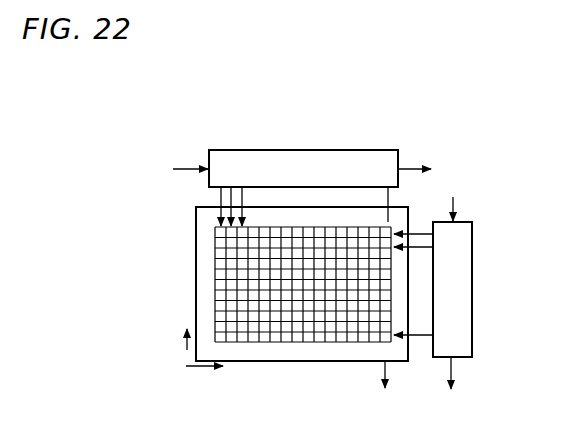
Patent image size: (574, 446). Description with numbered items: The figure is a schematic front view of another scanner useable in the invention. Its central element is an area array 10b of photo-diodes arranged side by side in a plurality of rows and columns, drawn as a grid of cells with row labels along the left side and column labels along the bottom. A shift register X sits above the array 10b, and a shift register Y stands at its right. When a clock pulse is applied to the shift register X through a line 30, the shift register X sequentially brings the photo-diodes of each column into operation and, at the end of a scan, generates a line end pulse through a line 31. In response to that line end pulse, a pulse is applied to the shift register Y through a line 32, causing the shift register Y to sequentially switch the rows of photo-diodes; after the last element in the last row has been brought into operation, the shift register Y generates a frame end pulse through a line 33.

The area array 10b is at (196, 282).
The line 30 is at (205, 167).
The line 31 is at (408, 163).
The line 32 is at (455, 206).
The line 33 is at (455, 375).
The shift register X is at (296, 150).
The shift register Y is at (472, 268).